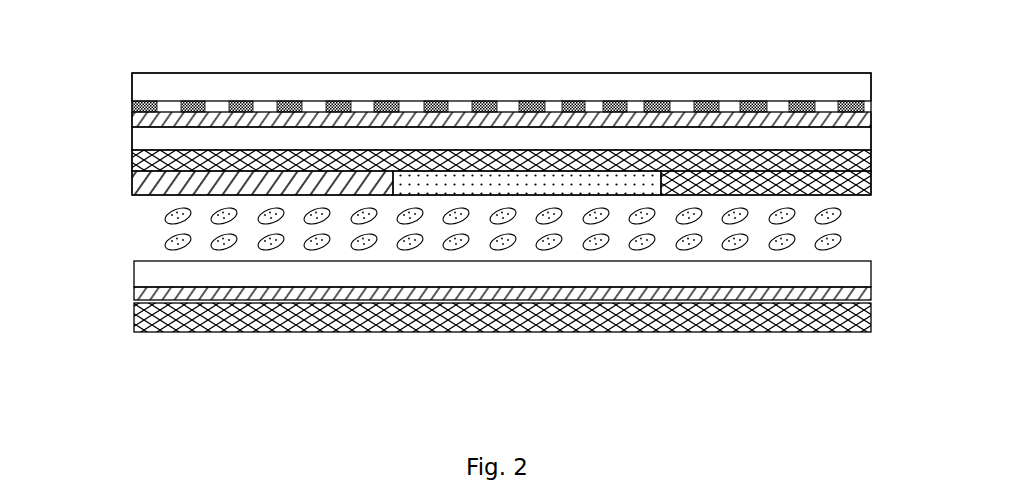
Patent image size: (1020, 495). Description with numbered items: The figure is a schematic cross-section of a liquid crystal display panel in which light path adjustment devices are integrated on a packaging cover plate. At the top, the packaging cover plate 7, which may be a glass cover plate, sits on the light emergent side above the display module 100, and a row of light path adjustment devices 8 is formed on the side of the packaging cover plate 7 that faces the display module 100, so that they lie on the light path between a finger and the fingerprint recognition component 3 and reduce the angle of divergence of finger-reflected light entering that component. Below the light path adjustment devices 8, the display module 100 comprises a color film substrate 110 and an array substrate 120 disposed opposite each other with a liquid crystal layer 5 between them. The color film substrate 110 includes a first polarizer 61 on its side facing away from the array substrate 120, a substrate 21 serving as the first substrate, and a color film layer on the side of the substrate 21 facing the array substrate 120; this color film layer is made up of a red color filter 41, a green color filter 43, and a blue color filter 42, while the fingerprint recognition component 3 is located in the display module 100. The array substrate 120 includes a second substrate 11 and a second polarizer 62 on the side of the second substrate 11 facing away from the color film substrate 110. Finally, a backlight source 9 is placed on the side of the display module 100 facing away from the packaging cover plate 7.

The display module 100 is at (882, 107).
The color film substrate 110 is at (455, 113).
The array substrate 120 is at (457, 331).
The packaging cover plate 7 is at (620, 83).
The light path adjustment devices 8 is at (520, 102).
The first polarizer 61 is at (697, 128).
The substrate 21 is at (735, 138).
The fingerprint recognition component 3 is at (777, 160).
The red color filter 41 is at (155, 173).
The blue color filter 42 is at (822, 162).
The green color filter 43 is at (587, 190).
The liquid crystal layer 5 is at (179, 244).
The second substrate 11 is at (348, 268).
The second polarizer 62 is at (397, 292).
The backlight source 9 is at (843, 318).